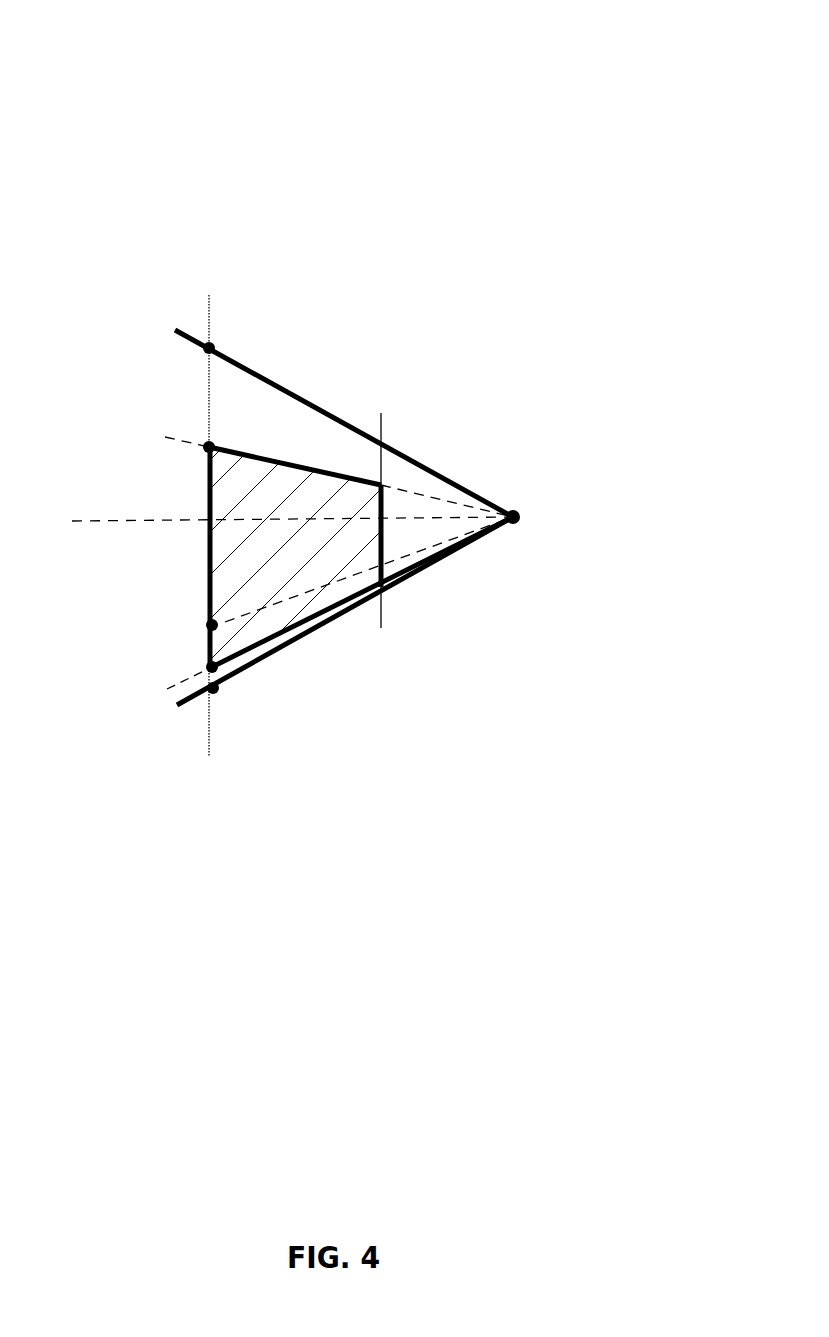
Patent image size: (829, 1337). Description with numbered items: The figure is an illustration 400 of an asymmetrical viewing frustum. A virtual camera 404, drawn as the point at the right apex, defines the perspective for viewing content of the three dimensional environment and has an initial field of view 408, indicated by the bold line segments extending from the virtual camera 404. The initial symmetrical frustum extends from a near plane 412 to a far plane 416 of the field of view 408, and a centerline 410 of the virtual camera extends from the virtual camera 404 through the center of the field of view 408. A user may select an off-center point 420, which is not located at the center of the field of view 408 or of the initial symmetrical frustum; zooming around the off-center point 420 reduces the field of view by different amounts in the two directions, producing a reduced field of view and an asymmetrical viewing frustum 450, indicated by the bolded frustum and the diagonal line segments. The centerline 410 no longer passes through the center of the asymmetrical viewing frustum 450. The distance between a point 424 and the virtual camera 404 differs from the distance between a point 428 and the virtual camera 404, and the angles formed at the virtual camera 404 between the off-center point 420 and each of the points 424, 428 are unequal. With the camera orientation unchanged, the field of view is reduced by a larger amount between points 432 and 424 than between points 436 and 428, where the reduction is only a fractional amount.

The illustration 400 is at (680, 93).
The virtual camera 404 is at (519, 515).
The initial field of view 408 is at (330, 411).
The centerline 410 is at (270, 523).
The near plane 412 is at (381, 430).
The far plane 416 is at (210, 320).
The off-center point 420 is at (207, 629).
The point 424 is at (209, 447).
The point 428 is at (205, 670).
The point 432 is at (209, 348).
The point 436 is at (205, 700).
The asymmetrical viewing frustum 450 is at (282, 613).